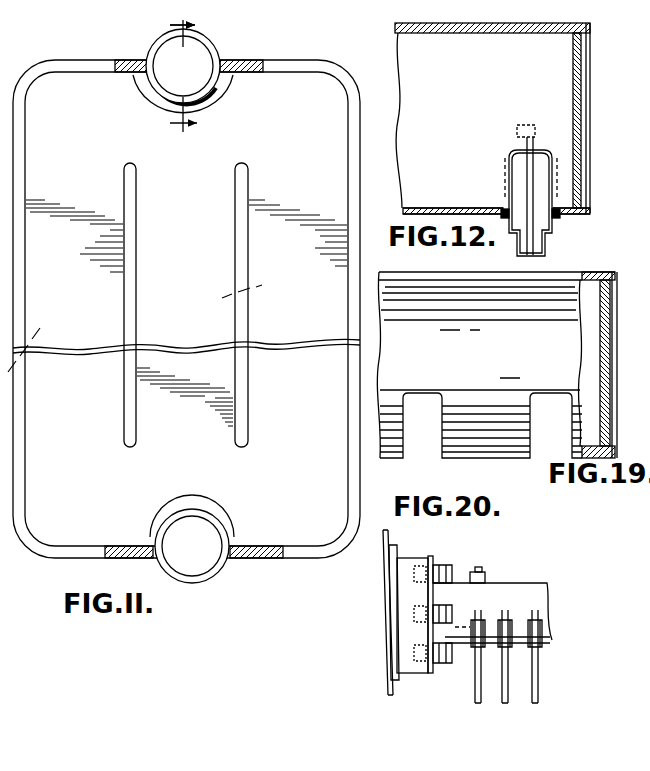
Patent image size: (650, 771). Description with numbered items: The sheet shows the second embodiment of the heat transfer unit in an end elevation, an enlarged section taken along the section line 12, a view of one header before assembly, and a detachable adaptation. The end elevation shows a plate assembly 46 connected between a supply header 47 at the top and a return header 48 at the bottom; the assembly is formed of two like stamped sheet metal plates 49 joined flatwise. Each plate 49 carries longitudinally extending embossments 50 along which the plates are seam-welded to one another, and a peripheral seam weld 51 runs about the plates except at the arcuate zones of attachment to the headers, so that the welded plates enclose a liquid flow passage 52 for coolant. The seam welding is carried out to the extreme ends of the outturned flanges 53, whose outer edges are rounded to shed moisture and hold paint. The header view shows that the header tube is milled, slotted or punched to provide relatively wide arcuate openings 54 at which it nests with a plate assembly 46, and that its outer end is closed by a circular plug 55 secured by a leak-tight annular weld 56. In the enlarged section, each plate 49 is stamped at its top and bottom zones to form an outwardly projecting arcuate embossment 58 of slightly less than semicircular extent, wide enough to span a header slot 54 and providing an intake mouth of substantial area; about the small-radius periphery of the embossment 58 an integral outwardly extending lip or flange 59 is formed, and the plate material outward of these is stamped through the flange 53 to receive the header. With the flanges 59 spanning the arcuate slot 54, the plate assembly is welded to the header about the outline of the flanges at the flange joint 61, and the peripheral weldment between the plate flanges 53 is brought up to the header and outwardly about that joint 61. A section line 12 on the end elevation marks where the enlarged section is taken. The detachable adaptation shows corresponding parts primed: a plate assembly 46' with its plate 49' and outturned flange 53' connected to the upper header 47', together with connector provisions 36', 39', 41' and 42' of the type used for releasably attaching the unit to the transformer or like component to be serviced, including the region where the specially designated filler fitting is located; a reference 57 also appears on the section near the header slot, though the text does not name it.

In FIG. 11, the section line 12 is at (98, 202).
In FIG. 11, the plate assembly 46 is at (35, 581).
In FIG. 12, the plate assembly 46 is at (560, 261).
In FIG. 11, the supply header 47 is at (195, 64).
In FIG. 12, the supply header 47 is at (384, 120).
In FIG. 19, the supply header 47 is at (394, 353).
In FIG. 11, the return header 48 is at (223, 575).
In FIG. 12, the stamped sheet metal plate 49 is at (502, 265).
In FIG. 11, the longitudinally extending embossment 50 is at (235, 258).
In FIG. 11, the peripheral seam weld 51 is at (245, 72).
In FIG. 11, the liquid flow passage 52 is at (231, 300).
In FIG. 11, the outturned flange 53 is at (184, 309).
In FIG. 12, the outturned flange 53 is at (548, 186).
In FIG. 12, the arcuate opening 54 is at (507, 212).
In FIG. 19, the arcuate opening 54 is at (440, 433).
In FIG. 11, the circular plug 55 is at (170, 77).
In FIG. 12, the circular plug 55 is at (575, 88).
In FIG. 19, the circular plug 55 is at (600, 345).
In FIG. 12, the annular weld 56 is at (577, 40).
In FIG. 19, the annular weld 56 is at (580, 322).
In FIG. 12, the slot 57 is at (507, 205).
In FIG. 11, the arcuate embossment 58 is at (218, 97).
In FIG. 12, the arcuate embossment 58 is at (550, 232).
In FIG. 11, the lip or flange 59 is at (161, 90).
In FIG. 12, the lip or flange 59 is at (503, 210).
In FIG. 12, the flange joint weld 61 is at (563, 213).
In FIG. 20, the flange joint weld 61 is at (483, 570).
In FIG. 20, the panel 36' is at (359, 622).
In FIG. 20, the block 39' is at (414, 600).
In FIG. 20, the nut 41' is at (456, 625).
In FIG. 20, the plate 42' is at (456, 602).
In FIG. 20, the plate assembly 46' is at (463, 661).
In FIG. 20, the upper header 47' is at (561, 641).
In FIG. 20, the stamped sheet metal plate 49' is at (563, 670).
In FIG. 20, the outturned flange 53' is at (492, 641).